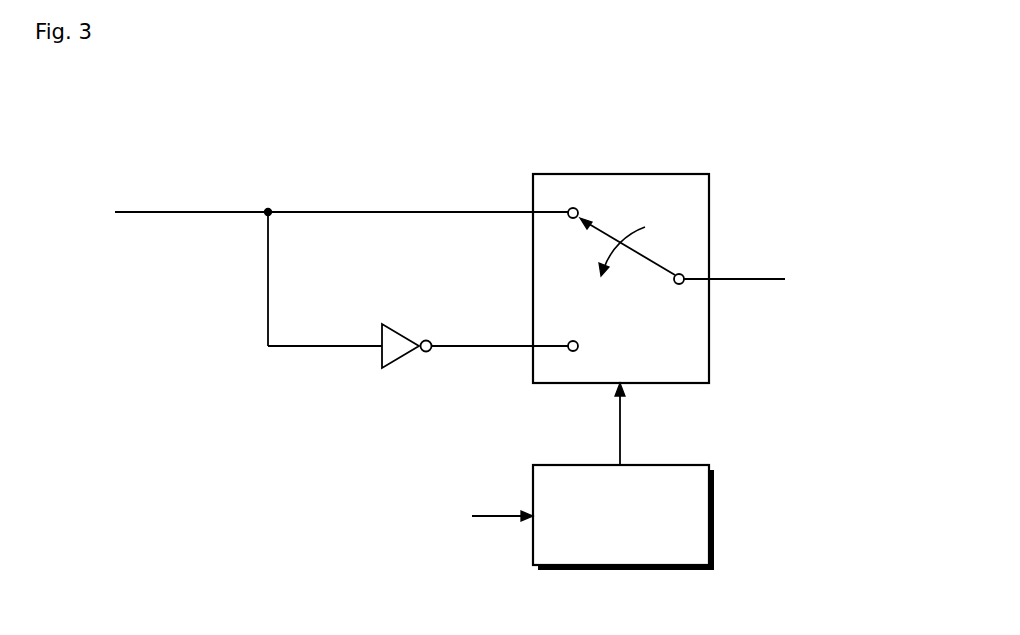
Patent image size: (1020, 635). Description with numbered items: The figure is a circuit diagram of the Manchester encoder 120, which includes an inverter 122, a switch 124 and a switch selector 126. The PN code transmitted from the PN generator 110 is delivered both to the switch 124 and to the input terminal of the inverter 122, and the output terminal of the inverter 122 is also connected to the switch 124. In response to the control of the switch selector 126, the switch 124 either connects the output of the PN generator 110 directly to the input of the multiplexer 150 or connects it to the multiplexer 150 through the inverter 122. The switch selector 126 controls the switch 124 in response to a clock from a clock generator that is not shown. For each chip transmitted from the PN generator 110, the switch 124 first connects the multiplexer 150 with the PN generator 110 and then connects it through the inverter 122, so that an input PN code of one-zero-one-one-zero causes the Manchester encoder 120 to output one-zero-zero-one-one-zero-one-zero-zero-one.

The PN generator 110 is at (103, 225).
The Manchester encoder 120 is at (842, 81).
The inverter 122 is at (400, 332).
The switch 124 is at (673, 174).
The switch selector 126 is at (672, 464).
The multiplexer 150 is at (836, 292).